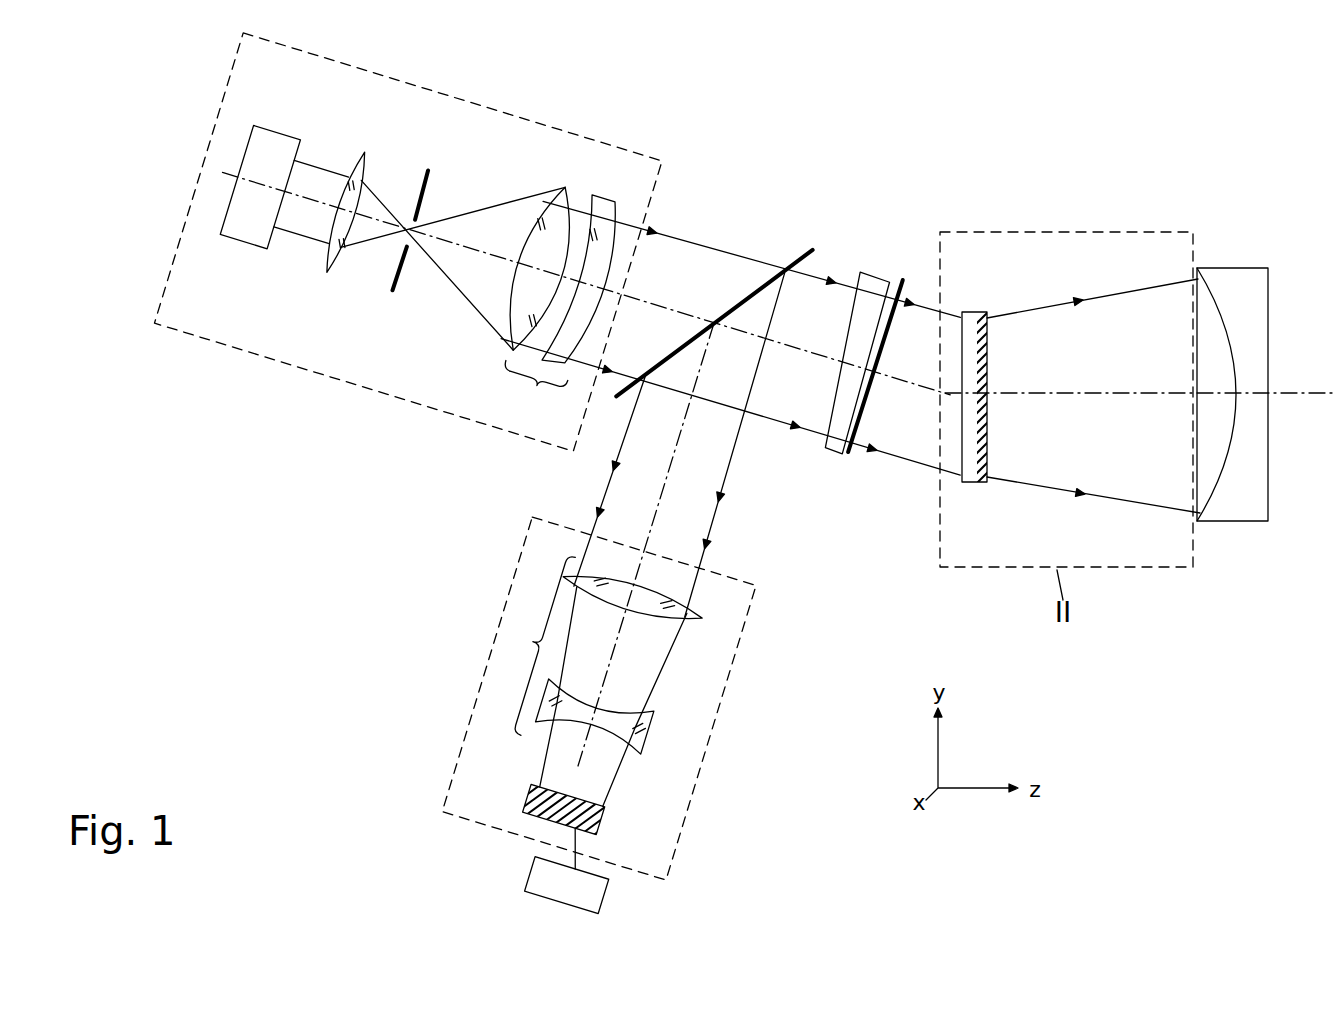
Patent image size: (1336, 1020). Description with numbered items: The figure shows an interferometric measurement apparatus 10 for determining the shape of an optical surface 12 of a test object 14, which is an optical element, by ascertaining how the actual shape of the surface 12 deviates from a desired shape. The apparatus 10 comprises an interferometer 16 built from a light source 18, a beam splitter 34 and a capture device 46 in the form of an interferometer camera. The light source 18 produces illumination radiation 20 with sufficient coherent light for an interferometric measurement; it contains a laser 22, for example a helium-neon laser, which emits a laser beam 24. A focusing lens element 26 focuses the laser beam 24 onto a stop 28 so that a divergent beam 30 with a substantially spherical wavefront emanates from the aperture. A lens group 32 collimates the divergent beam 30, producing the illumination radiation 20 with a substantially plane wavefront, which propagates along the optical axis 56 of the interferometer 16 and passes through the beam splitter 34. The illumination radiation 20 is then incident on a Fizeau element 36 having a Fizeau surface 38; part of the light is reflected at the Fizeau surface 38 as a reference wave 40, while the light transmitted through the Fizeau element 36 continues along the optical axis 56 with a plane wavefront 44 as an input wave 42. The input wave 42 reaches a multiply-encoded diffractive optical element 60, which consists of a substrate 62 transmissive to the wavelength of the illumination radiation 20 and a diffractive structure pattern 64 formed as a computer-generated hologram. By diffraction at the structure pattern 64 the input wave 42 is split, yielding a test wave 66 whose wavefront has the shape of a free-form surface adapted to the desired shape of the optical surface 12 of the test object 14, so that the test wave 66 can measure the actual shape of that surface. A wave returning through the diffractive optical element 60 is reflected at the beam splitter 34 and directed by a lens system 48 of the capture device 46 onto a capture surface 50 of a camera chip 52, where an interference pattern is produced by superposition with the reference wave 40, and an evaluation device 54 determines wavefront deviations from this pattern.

The interferometric measurement apparatus 10 is at (728, 112).
The surface 12 is at (1217, 476).
The test object 14 is at (1270, 328).
The interferometer 16 is at (432, 493).
The light source 18 is at (548, 121).
The illumination radiation 20 is at (663, 226).
The laser 22 is at (278, 129).
The laser beam 24 is at (318, 160).
The focusing lens element 26 is at (362, 153).
The stop 28 is at (418, 168).
The divergent beam 30 is at (462, 293).
The lens group 32 is at (557, 298).
The beam splitter 34 is at (803, 244).
The Fizeau element 36 is at (829, 461).
The Fizeau surface 38 is at (845, 459).
The reference wave 40 is at (838, 272).
The input wave 42 is at (913, 297).
The plane wavefront 44 is at (897, 268).
The capture device 46 is at (461, 745).
The lens system 48 is at (534, 642).
The capture surface 50 is at (607, 808).
The camera chip 52 is at (528, 794).
The evaluation device 54 is at (530, 880).
The optical axis 56 is at (799, 348).
The diffractive optical element 60 is at (966, 310).
The substrate 62 is at (970, 487).
The diffractive structure pattern 64 is at (990, 436).
The test wave 66 is at (606, 470).